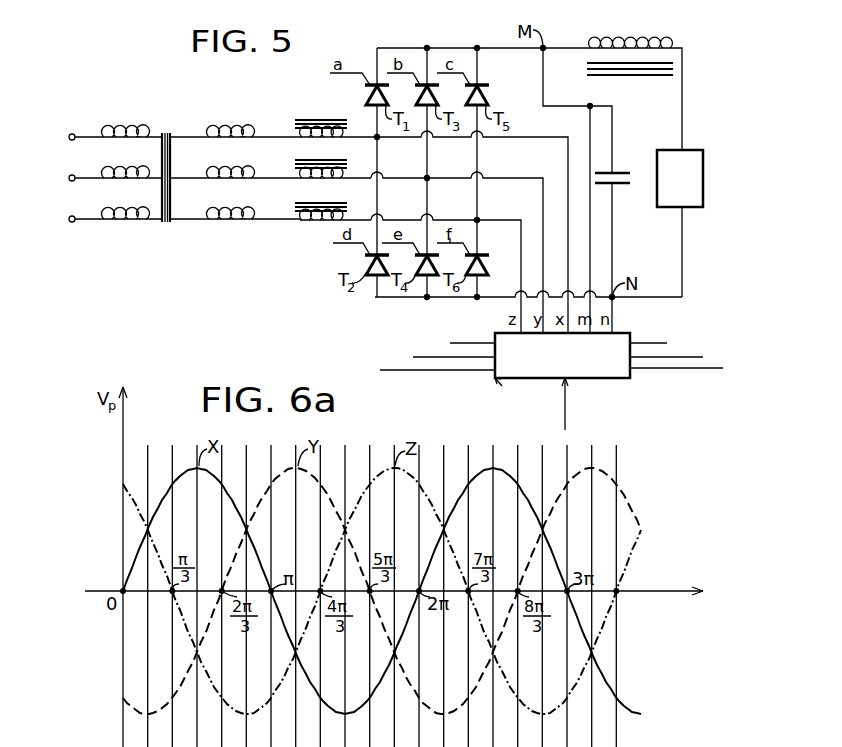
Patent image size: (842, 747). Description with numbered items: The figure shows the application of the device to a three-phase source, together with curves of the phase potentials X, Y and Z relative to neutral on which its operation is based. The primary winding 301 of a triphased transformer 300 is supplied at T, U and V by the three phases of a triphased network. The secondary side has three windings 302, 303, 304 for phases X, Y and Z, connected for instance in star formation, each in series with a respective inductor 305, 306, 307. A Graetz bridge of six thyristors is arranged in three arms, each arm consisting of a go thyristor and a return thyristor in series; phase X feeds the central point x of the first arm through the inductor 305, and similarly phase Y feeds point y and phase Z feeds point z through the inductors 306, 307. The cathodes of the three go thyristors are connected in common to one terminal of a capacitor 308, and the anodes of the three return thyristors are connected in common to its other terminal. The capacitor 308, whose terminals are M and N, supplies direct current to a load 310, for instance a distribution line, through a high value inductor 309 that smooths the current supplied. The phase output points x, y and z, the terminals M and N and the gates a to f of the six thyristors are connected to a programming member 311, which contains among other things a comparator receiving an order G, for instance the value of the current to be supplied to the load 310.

The triphased transformer 300 is at (176, 177).
The primary winding 301 is at (162, 113).
The secondary winding (phase X) 302 is at (227, 129).
The secondary winding (phase Y) 303 is at (227, 170).
The secondary winding (phase Z) 304 is at (235, 202).
The inductor 305 is at (333, 142).
The inductor 306 is at (330, 184).
The inductor 307 is at (322, 226).
The capacitor 308 is at (625, 186).
The high value inductor 309 is at (622, 28).
The load 310 is at (674, 161).
The programming member 311 is at (615, 380).